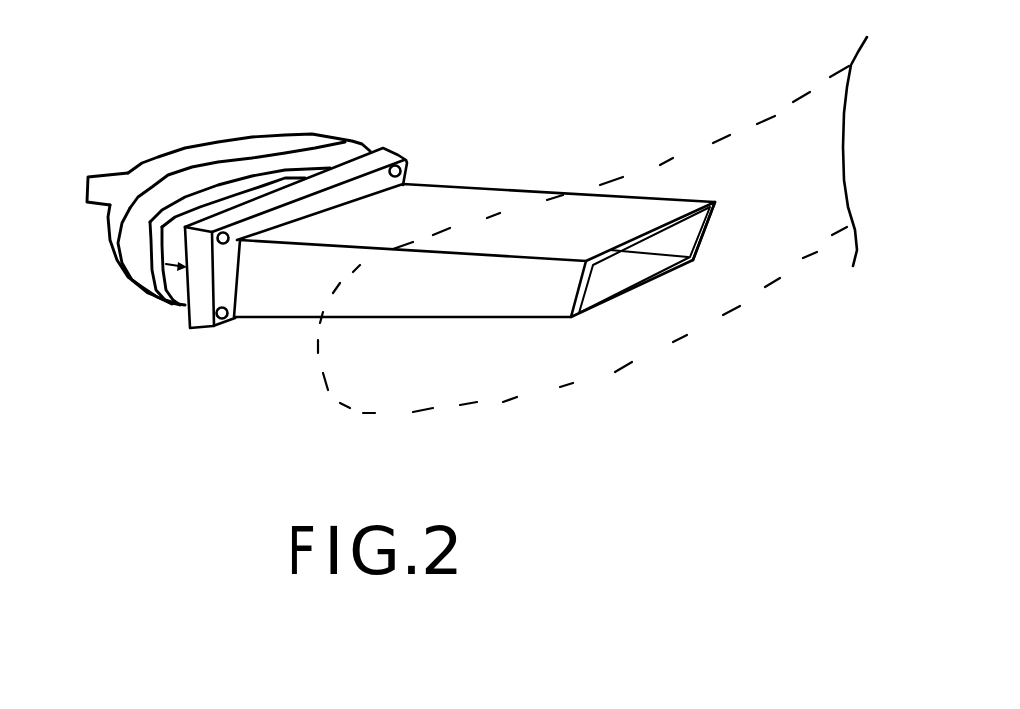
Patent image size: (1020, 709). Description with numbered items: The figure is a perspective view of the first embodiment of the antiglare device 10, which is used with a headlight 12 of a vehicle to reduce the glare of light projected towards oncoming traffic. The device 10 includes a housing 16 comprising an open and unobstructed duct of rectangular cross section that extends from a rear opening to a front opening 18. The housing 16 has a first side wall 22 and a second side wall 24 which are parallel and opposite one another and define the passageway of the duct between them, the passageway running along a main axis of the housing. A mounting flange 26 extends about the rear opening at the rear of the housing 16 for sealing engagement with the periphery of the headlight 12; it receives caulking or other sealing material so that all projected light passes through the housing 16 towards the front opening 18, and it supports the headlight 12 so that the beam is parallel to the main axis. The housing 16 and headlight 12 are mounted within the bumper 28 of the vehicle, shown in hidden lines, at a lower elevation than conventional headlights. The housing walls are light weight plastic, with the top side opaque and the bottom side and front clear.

The antiglare device 10 is at (473, 110).
The headlight 12 is at (227, 197).
The housing 16 is at (478, 198).
The front opening 18 is at (626, 268).
The first side wall 22 is at (497, 300).
The second side wall 24 is at (692, 232).
The mounting flange 26 is at (208, 290).
The bumper 28 is at (760, 121).